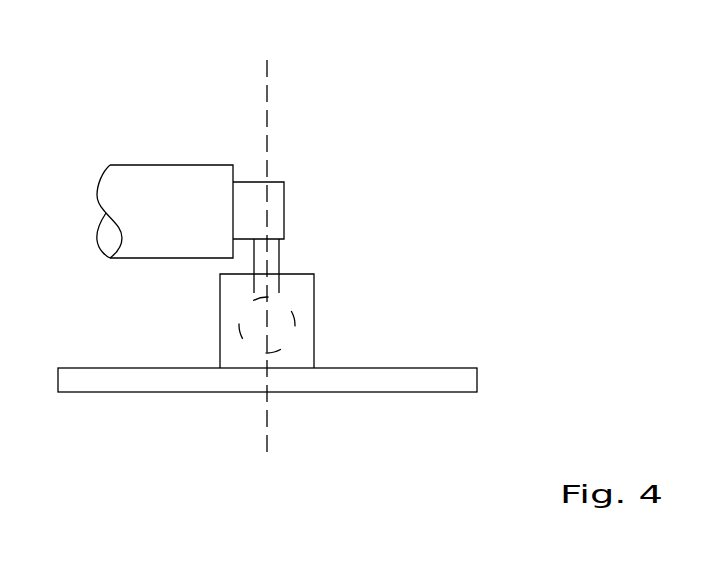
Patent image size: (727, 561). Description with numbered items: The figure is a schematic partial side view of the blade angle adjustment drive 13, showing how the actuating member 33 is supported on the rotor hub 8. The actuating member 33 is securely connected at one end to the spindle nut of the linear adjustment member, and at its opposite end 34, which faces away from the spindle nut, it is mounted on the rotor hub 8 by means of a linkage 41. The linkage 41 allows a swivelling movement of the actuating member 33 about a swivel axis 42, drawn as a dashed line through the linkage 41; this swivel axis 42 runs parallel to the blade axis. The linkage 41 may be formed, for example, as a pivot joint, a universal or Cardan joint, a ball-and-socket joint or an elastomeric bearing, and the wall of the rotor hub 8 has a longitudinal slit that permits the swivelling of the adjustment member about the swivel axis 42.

The rotor hub 8 is at (126, 392).
The blade angle adjustment drive 13 is at (401, 95).
The actuating member 33 is at (137, 172).
The end of the actuating member 34 is at (255, 190).
The linkage 41 is at (314, 298).
The swivel axis 42 is at (267, 90).